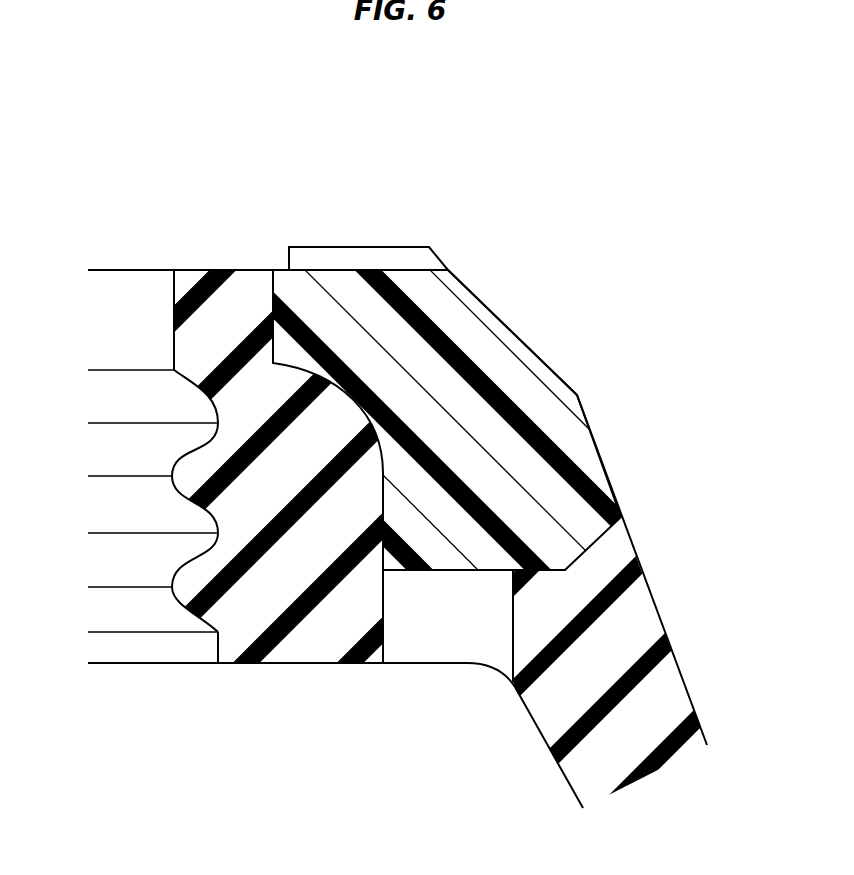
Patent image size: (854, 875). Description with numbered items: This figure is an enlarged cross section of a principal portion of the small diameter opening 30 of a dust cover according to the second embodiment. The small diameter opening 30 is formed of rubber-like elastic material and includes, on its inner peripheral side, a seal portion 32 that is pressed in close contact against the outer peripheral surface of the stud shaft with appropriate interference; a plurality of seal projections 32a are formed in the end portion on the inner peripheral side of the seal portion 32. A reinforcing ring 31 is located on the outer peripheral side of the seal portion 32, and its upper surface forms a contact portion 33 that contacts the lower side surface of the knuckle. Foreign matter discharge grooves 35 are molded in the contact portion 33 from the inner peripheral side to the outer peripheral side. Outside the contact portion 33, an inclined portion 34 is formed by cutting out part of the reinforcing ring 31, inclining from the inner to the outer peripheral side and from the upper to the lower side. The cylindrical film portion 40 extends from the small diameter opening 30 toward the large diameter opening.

The small diameter opening 30 is at (180, 233).
The reinforcing ring 31 is at (547, 422).
The seal portion 32 is at (303, 650).
The seal projections 32a is at (183, 590).
The contact portion 33 is at (308, 247).
The inclined portion 34 is at (483, 298).
The foreign matter discharge grooves 35 is at (387, 270).
The cylindrical film portion 40 is at (557, 705).